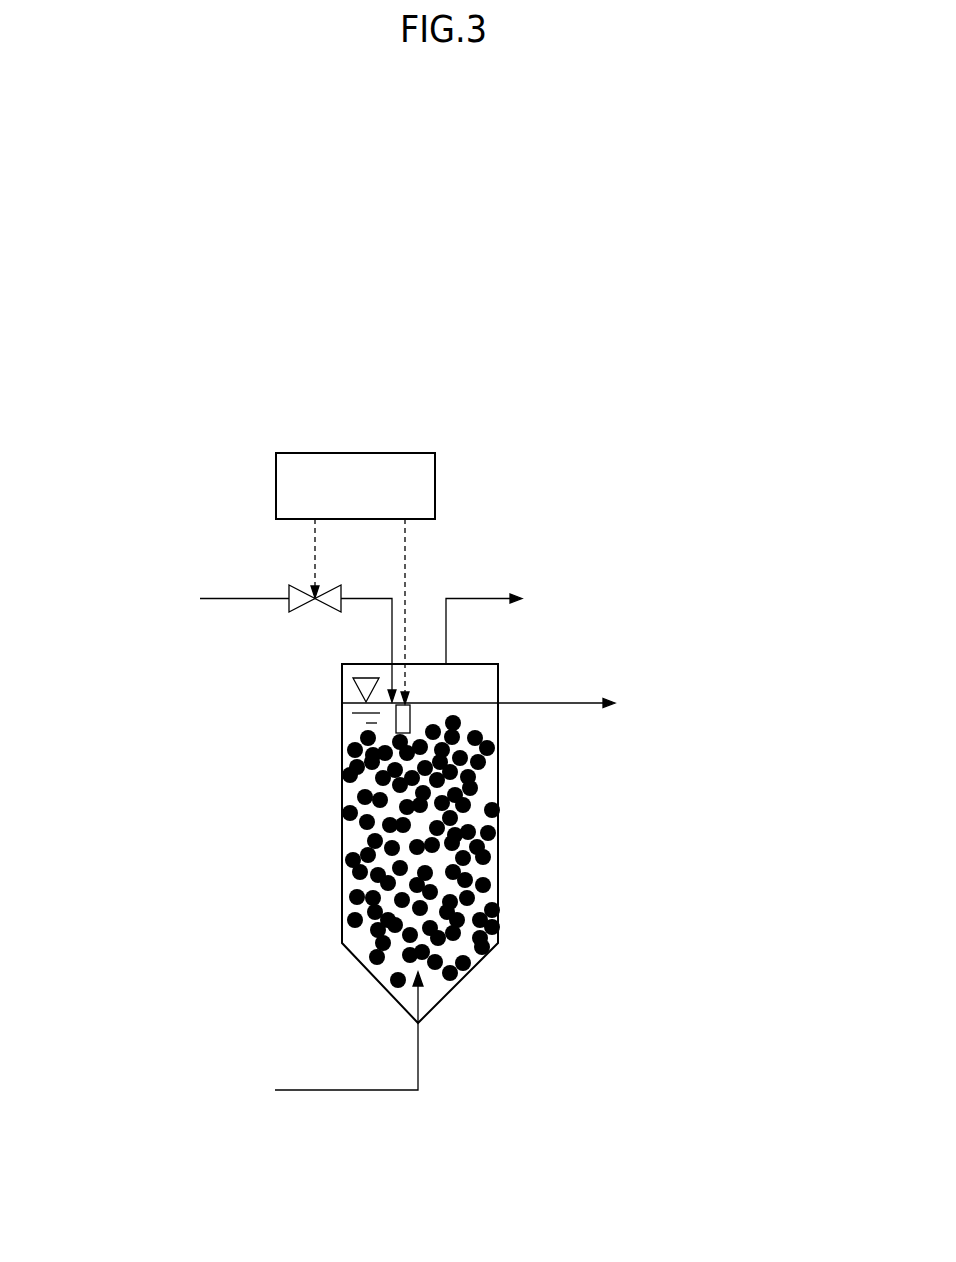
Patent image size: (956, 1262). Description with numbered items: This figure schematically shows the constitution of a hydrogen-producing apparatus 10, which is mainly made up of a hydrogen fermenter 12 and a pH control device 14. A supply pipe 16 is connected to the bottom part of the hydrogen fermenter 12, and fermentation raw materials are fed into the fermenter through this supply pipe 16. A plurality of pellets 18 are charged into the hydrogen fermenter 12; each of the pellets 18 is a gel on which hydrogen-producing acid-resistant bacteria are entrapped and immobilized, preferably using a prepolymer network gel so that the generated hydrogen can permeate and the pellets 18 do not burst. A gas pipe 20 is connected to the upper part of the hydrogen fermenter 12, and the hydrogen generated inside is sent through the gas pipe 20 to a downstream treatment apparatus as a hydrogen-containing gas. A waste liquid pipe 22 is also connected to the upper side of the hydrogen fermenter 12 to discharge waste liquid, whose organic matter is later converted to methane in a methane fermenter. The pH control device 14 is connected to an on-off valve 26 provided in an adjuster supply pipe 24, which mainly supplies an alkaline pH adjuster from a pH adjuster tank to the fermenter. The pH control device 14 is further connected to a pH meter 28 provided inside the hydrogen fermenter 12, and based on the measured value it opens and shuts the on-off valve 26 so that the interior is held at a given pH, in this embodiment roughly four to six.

The hydrogen-producing apparatus 10 is at (489, 406).
The hydrogen fermenter 12 is at (502, 865).
The pH control device 14 is at (360, 453).
The supply pipe 16 is at (418, 1062).
The pellets 18 is at (350, 858).
The gas pipe 20 is at (486, 598).
The waste liquid pipe 22 is at (550, 702).
The adjuster supply pipe 24 is at (228, 598).
The on-off valve 26 is at (301, 612).
The pH meter 28 is at (410, 715).